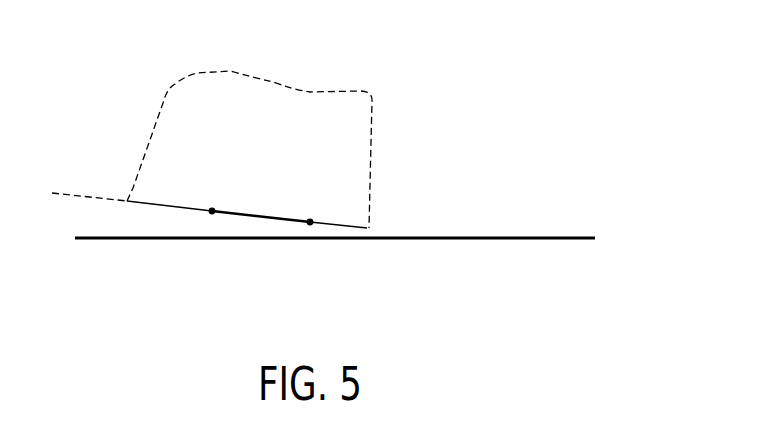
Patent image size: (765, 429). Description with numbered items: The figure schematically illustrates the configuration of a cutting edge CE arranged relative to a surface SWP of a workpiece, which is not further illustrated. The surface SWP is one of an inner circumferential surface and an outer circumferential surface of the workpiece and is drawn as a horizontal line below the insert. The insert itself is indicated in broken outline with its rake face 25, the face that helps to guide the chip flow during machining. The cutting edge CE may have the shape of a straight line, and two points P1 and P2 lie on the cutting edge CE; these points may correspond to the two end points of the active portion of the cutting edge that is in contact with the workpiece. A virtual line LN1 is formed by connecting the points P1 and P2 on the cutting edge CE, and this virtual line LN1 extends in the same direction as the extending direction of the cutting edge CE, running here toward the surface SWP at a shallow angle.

The rake face 25 is at (284, 162).
The virtual line LN1 is at (65, 195).
The cutting edge CE is at (142, 203).
The point P1 is at (212, 212).
The point P2 is at (310, 223).
The surface of a workpiece SWP is at (527, 235).